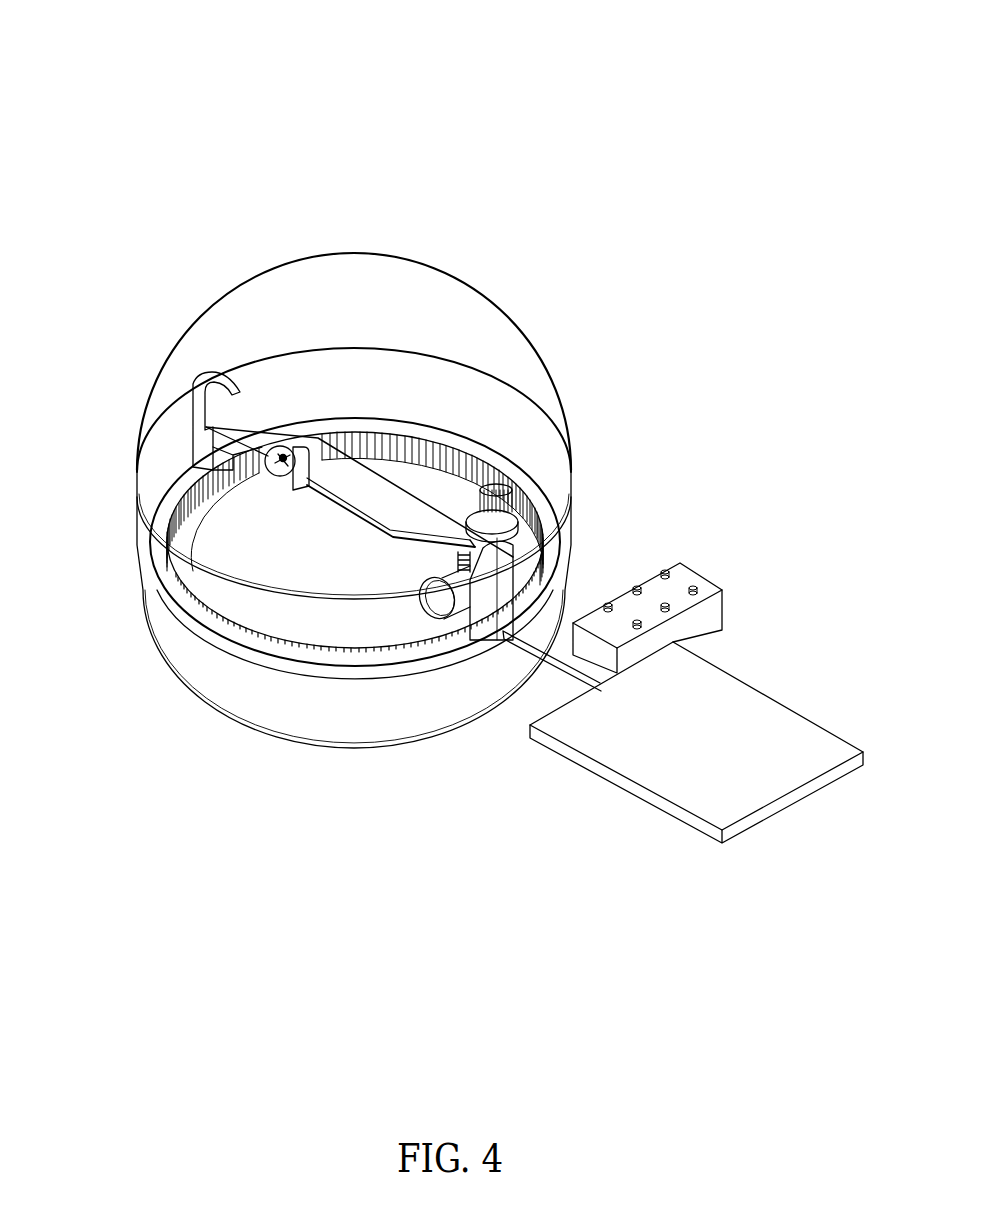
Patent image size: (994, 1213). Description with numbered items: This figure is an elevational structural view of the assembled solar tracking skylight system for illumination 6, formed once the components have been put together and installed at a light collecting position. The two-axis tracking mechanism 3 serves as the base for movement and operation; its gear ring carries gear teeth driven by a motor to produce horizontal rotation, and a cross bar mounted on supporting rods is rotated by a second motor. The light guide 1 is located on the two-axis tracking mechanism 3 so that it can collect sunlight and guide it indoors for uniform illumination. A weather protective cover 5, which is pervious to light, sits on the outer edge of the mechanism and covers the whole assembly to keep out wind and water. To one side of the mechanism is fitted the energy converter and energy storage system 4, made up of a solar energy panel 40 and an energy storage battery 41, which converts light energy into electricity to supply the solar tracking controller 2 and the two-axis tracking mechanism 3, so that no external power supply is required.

The light guide 1 is at (373, 515).
The solar tracking controller 2 is at (172, 535).
The two-axis tracking mechanism 3 is at (378, 660).
The energy converter and energy storage system 4 is at (725, 646).
The solar energy panel 40 is at (767, 745).
The energy storage battery 41 is at (718, 585).
The weather protective cover 5 is at (218, 303).
The solar tracking skylight system for illumination 6 is at (520, 250).